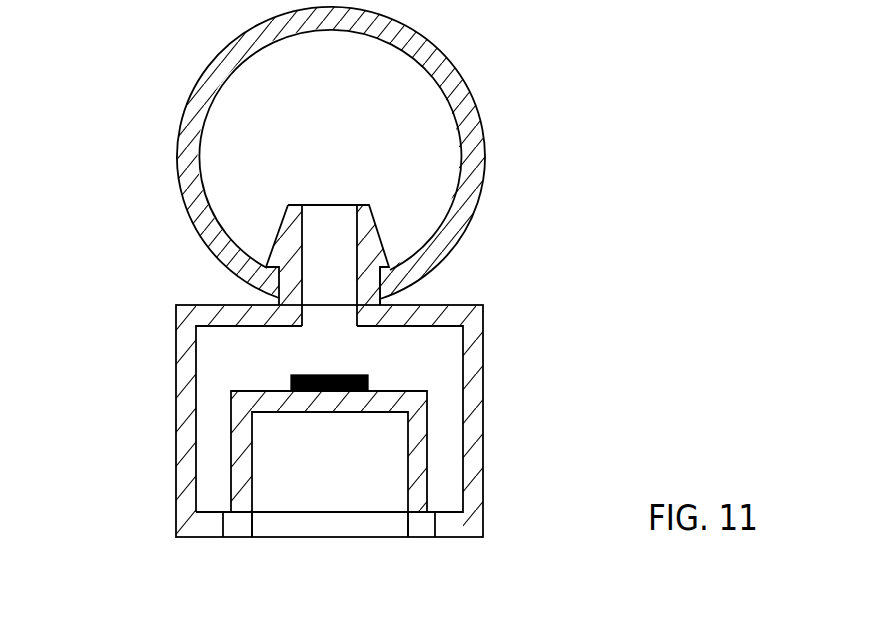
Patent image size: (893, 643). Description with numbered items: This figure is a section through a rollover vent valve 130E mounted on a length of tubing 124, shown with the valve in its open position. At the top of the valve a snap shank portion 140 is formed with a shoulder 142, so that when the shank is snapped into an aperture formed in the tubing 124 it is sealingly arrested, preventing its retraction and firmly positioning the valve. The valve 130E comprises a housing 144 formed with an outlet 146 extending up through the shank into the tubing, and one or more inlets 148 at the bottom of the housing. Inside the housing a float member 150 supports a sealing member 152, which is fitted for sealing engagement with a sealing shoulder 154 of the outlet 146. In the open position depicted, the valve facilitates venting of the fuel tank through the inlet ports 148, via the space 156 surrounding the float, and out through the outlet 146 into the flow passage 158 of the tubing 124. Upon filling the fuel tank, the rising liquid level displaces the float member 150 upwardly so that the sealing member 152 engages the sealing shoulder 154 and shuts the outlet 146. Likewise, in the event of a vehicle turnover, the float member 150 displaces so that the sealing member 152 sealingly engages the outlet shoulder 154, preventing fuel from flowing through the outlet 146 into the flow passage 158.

The rollover vent valve 130E is at (177, 417).
The tubing 124 is at (192, 150).
The flow passage 158 is at (257, 102).
The snap shank portion 140 is at (373, 243).
The shoulder 142 is at (398, 283).
The outlet 146 is at (328, 228).
The housing 144 is at (470, 415).
The space 156 is at (417, 363).
The sealing shoulder 154 is at (300, 328).
The sealing member 152 is at (290, 378).
The float member 150 is at (240, 455).
The inlets 148 is at (238, 523).